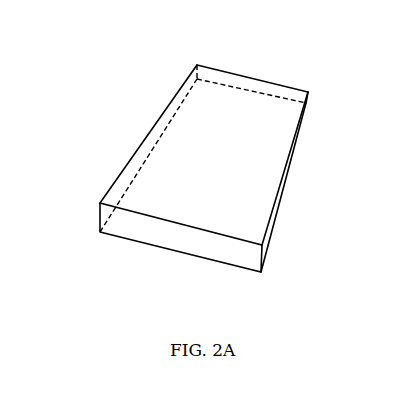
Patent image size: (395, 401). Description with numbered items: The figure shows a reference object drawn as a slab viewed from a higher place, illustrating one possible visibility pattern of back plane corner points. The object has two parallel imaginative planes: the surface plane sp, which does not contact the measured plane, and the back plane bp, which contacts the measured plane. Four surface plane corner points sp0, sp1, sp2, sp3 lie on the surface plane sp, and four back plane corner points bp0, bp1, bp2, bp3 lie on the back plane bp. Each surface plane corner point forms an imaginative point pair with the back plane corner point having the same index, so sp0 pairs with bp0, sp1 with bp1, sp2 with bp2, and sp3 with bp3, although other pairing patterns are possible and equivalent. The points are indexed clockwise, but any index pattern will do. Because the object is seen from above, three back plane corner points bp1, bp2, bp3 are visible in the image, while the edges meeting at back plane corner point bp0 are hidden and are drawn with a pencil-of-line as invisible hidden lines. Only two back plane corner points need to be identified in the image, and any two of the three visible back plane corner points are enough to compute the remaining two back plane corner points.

The surface plane sp is at (246, 158).
The back plane bp is at (247, 193).
The surface plane corner point sp0 is at (197, 65).
The surface plane corner point sp1 is at (308, 92).
The surface plane corner point sp2 is at (262, 245).
The surface plane corner point sp3 is at (100, 203).
The back plane corner point bp0 is at (197, 78).
The back plane corner point bp1 is at (308, 95).
The back plane corner point bp2 is at (261, 272).
The back plane corner point bp3 is at (100, 232).